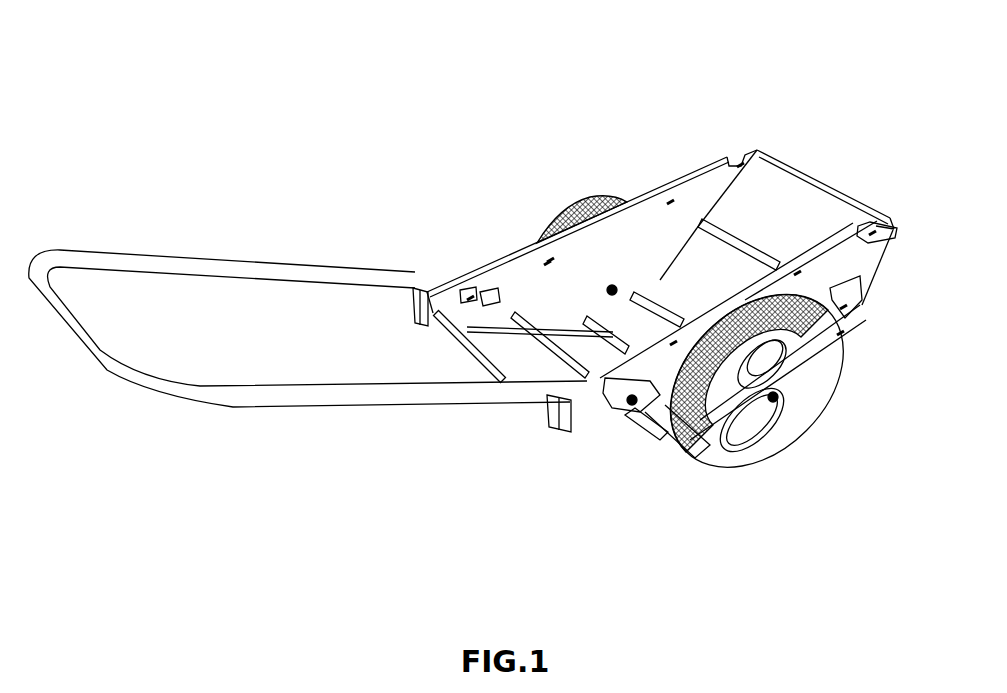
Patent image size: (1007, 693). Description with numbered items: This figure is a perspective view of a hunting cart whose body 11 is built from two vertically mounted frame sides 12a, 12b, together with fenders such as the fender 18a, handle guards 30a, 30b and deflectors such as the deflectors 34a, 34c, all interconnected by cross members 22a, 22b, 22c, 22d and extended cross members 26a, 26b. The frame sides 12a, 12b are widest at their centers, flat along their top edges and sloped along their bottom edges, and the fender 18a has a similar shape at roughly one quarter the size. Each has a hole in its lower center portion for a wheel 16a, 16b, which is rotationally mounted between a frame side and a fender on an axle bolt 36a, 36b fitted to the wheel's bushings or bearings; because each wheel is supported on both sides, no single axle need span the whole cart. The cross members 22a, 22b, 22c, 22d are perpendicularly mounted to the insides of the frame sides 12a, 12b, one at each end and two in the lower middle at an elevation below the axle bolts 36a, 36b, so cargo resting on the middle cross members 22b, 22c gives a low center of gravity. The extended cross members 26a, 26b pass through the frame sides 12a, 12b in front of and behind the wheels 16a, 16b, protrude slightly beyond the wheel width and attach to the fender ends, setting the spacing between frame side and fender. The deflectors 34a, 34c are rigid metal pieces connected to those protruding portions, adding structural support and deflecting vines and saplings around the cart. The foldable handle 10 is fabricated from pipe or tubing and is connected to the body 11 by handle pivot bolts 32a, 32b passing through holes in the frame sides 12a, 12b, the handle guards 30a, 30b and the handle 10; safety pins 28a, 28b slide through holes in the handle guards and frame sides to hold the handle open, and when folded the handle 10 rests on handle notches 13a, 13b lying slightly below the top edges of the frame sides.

The handle 10 is at (203, 263).
The body 11 is at (721, 130).
The frame side 12a is at (847, 252).
The frame side 12b is at (512, 273).
The handle notch 13a is at (877, 222).
The handle notch 13b is at (745, 155).
The wheel 16a is at (743, 462).
The wheel 16b is at (583, 203).
The fender 18a is at (802, 363).
The cross member 22a is at (467, 348).
The cross member 22b is at (603, 337).
The cross member 22c is at (653, 308).
The cross member 22d is at (798, 175).
The extended cross member 26a is at (658, 427).
The extended cross member 26b is at (752, 258).
The safety pin 28a is at (632, 400).
The safety pin 28b is at (492, 300).
The handle guard 30a is at (578, 415).
The handle guard 30b is at (413, 305).
The handle pivot bolt 32a is at (608, 393).
The handle pivot bolt 32b is at (465, 292).
The deflector 34a is at (634, 428).
The deflector 34c is at (855, 293).
The axle bolt 36a is at (775, 402).
The axle bolt 36b is at (612, 285).